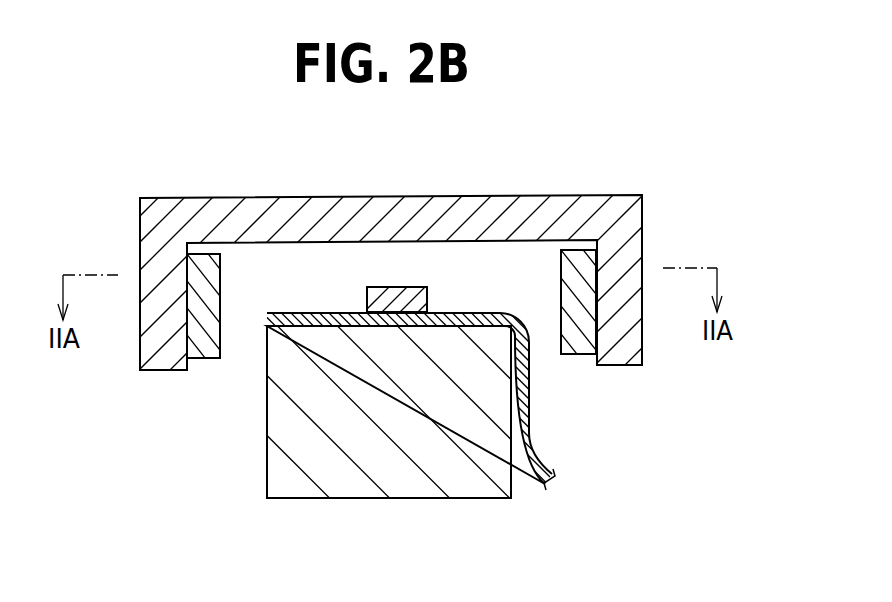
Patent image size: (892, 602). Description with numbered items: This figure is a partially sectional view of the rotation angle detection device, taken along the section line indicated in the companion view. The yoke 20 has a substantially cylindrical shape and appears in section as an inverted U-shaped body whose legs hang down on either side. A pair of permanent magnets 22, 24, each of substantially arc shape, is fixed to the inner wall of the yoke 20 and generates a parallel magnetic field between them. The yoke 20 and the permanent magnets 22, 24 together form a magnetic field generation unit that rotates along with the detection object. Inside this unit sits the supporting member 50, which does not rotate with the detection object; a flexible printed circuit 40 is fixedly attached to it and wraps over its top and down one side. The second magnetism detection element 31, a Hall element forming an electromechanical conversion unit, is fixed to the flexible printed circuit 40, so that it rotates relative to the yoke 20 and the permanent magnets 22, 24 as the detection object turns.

The yoke 20 is at (388, 210).
The permanent magnet 22 is at (212, 267).
The permanent magnet 24 is at (571, 268).
The second magnetism detection element 31 is at (403, 292).
The flexible printed circuit 40 is at (463, 316).
The supporting member 50 is at (282, 431).